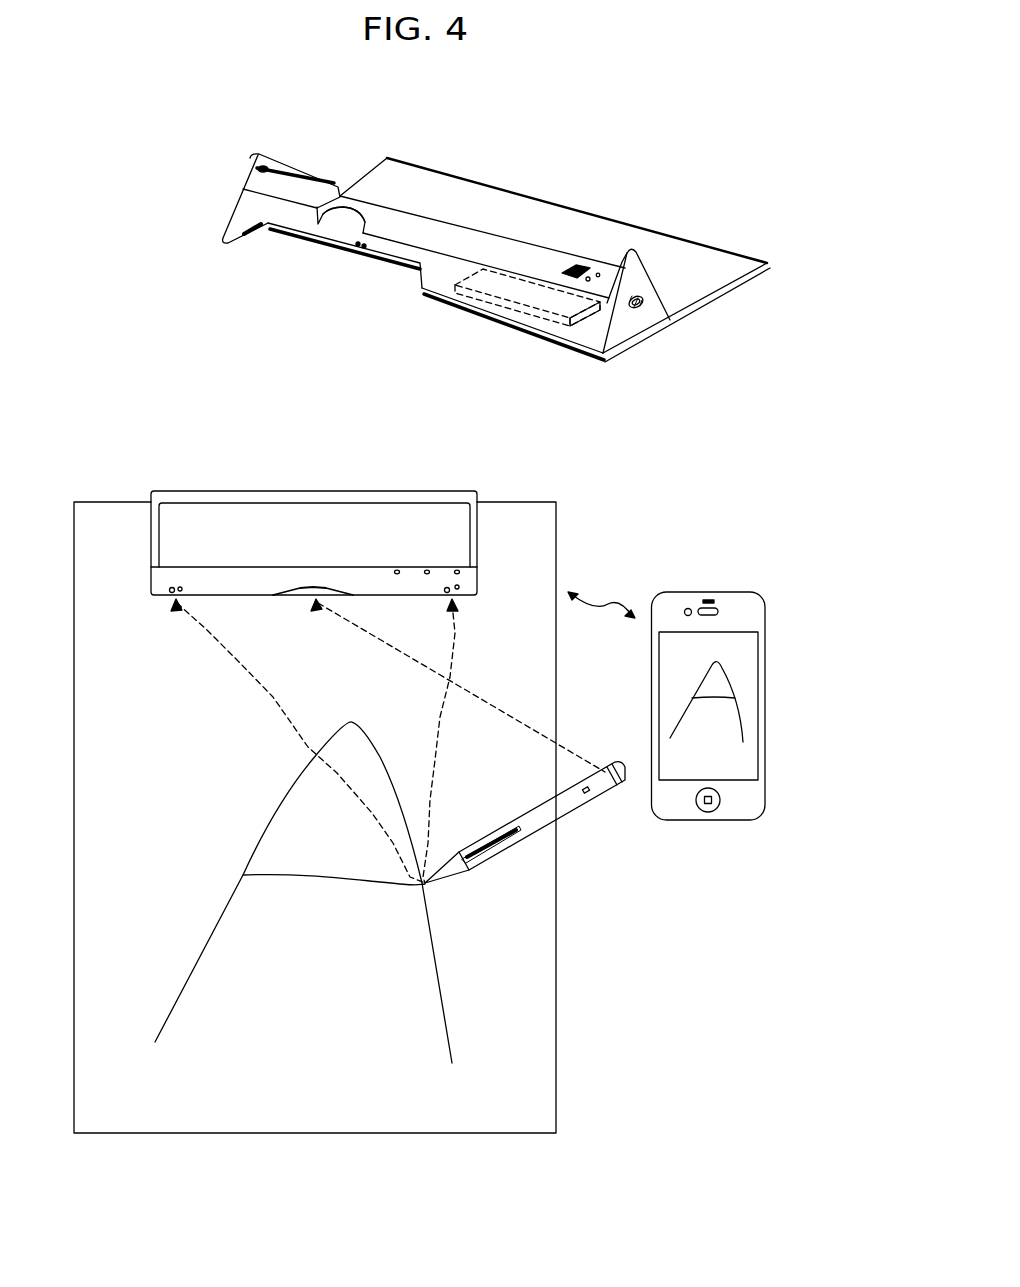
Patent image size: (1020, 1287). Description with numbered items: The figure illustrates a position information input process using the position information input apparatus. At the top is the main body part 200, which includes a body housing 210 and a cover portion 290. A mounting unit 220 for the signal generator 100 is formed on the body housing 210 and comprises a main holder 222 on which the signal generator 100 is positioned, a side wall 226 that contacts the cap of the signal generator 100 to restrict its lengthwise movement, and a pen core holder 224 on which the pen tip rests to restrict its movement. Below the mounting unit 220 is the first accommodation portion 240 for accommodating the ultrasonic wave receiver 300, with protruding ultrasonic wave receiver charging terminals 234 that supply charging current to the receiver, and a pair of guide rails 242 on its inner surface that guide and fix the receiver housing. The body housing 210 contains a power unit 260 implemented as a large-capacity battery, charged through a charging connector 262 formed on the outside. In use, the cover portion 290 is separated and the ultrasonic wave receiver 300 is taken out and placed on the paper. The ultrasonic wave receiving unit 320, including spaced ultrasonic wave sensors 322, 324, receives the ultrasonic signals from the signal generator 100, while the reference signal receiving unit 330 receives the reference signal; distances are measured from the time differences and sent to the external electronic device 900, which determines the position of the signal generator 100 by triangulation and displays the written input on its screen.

The signal generator 100 is at (587, 807).
The main body part 200 is at (477, 264).
The body housing 210 is at (303, 200).
The mounting unit 220 is at (555, 221).
The main holder 222 is at (476, 243).
The pen core holder 224 is at (298, 187).
The side wall 226 is at (615, 263).
The ultrasonic wave receiver charging terminals 234 is at (362, 253).
The first accommodation portion 240 is at (338, 233).
The guide rails 242 is at (255, 238).
The power unit 260 is at (565, 303).
The charging connector 262 is at (637, 307).
The cover portion 290 is at (638, 291).
The ultrasonic wave receiver 300 is at (308, 469).
The ultrasonic wave receiving unit 320 is at (315, 468).
The ultrasonic wave sensor 322 is at (173, 587).
The ultrasonic wave sensor 324 is at (455, 585).
The reference signal receiving unit 330 is at (313, 588).
The external electronic device 900 is at (708, 822).